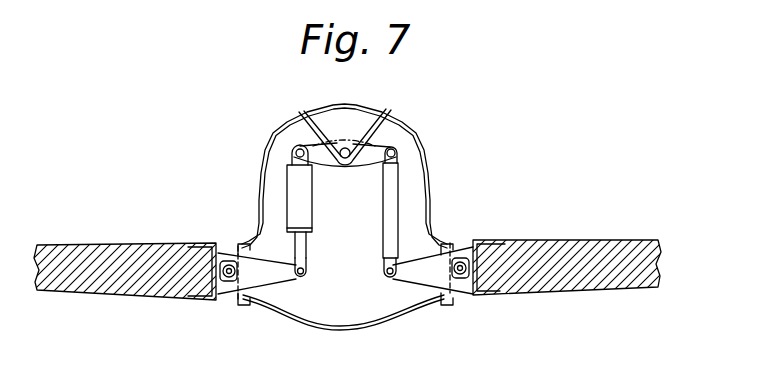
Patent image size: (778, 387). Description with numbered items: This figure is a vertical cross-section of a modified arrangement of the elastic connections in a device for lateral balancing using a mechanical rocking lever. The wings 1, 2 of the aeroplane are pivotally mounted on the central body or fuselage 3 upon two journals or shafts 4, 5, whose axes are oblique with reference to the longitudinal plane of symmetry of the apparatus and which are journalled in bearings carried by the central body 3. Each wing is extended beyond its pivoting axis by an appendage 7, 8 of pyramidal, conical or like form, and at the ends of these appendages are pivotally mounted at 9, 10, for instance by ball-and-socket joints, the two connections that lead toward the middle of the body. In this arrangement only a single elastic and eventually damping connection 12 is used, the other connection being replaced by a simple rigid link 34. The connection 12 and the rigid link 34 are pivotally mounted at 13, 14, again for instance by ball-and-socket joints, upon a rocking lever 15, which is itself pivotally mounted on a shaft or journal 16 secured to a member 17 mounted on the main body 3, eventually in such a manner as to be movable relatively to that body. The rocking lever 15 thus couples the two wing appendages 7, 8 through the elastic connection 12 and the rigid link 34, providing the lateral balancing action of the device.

The wing 1 is at (517, 253).
The wing 2 is at (127, 257).
The central body 3 is at (429, 167).
The journal 4 is at (461, 262).
The journal 5 is at (230, 264).
The appendage 7 is at (440, 271).
The appendage 8 is at (273, 271).
The pivot 9 is at (387, 273).
The pivot 10 is at (305, 270).
The elastic damping connection 12 is at (315, 194).
The pivot 13 is at (395, 151).
The pivot 14 is at (299, 149).
The rocking lever 15 is at (372, 159).
The shaft 16 is at (384, 113).
The member 17 is at (346, 148).
The rigid link 34 is at (386, 225).